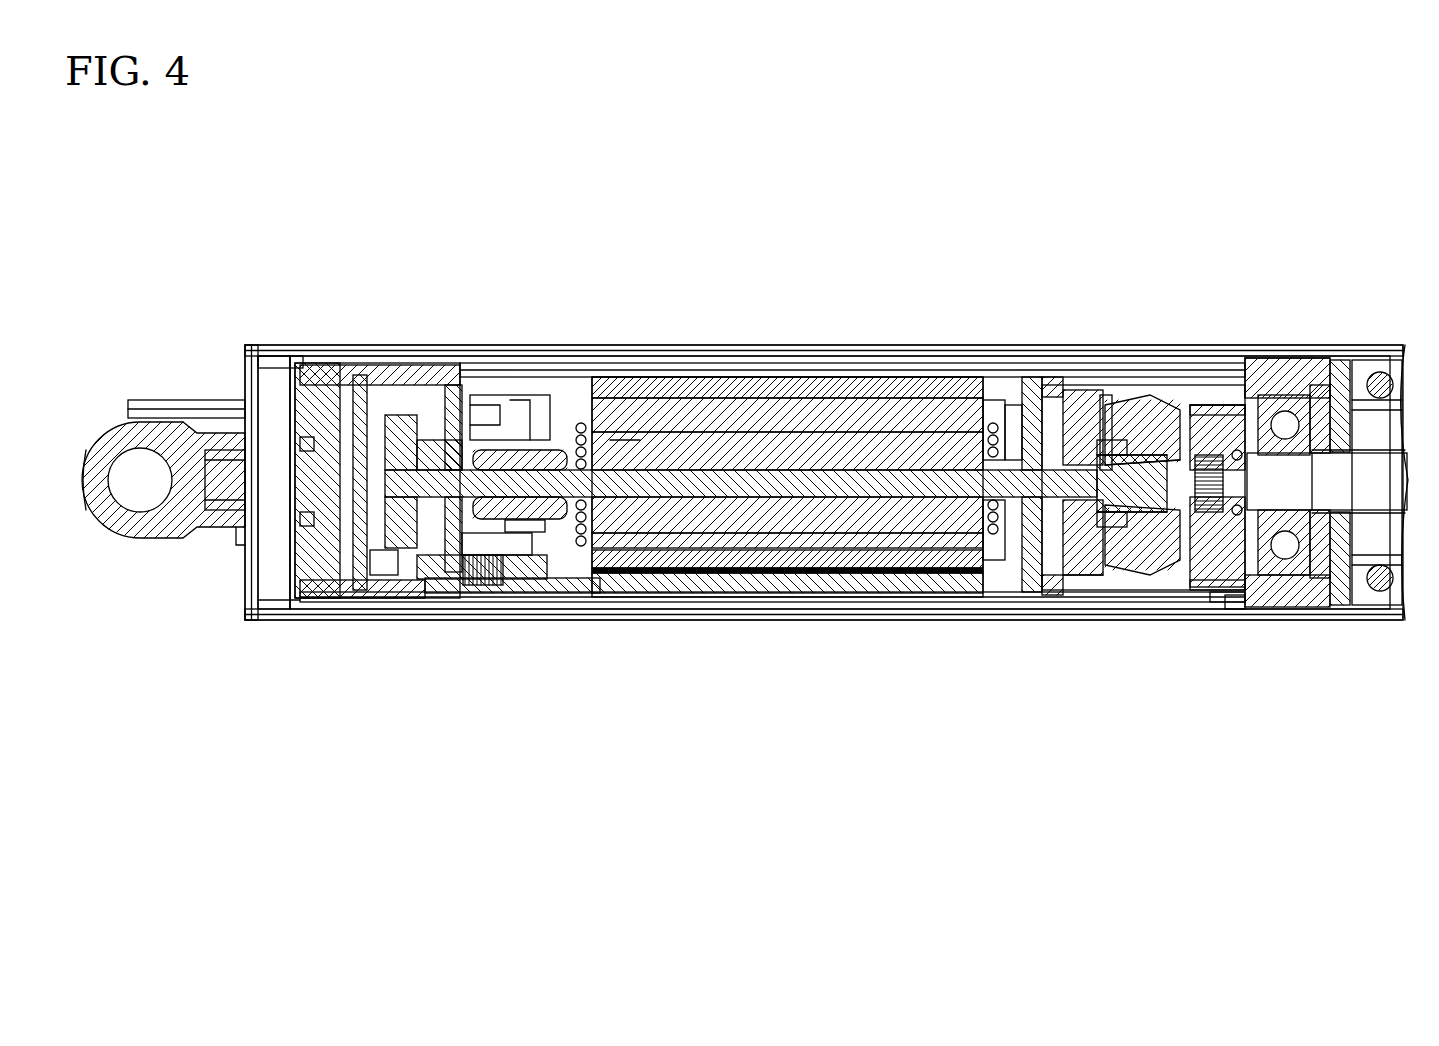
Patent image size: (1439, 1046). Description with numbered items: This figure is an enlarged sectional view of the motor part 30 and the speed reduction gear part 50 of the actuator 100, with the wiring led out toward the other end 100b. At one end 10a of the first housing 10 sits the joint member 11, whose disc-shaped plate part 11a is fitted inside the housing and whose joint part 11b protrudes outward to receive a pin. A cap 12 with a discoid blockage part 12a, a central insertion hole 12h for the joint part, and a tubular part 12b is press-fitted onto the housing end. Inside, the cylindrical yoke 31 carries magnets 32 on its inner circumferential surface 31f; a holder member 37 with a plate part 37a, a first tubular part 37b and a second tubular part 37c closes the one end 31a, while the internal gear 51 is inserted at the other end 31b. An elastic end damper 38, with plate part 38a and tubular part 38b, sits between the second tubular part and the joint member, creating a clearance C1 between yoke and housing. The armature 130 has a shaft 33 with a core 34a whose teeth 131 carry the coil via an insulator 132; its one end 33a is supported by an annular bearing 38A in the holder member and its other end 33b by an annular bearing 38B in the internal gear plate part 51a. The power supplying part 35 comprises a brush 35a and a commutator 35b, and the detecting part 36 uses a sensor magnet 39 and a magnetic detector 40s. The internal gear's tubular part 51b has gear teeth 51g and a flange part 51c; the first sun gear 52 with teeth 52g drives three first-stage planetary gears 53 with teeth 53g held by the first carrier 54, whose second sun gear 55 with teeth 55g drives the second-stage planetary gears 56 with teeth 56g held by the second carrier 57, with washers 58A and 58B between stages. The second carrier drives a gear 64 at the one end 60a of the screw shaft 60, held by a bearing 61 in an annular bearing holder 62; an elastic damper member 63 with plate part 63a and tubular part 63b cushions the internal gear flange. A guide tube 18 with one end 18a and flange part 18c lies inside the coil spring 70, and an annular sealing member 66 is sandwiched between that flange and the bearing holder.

The actuator 100 is at (1148, 226).
The mounting eye 100b is at (84, 472).
The first housing 10 is at (398, 410).
The one end of the first housing 10a is at (300, 370).
The joint member 11 is at (162, 425).
The plate part 11a is at (248, 400).
The joint part 11b is at (128, 400).
The cap 12 is at (258, 622).
The blockage part 12a is at (254, 612).
The tubular part 12b is at (320, 622).
The insertion hole 12h is at (236, 532).
The guide tube 18 is at (1360, 607).
The one end of the guide tube 18a is at (1380, 375).
The flange part 18c is at (1360, 375).
The motor part 30 is at (832, 336).
The yoke 31 is at (758, 372).
The one end of the yoke 31a is at (470, 592).
The other end of the yoke 31b is at (1205, 604).
The inner circumferential surface 31f is at (705, 392).
The magnets 32 is at (805, 385).
The shaft 33 is at (885, 487).
The one end of the shaft 33a is at (445, 440).
The other end of the shaft 33b is at (1002, 515).
The core 34a is at (748, 545).
The power supplying part 35 is at (520, 455).
The brush 35a is at (527, 520).
The commutator 35b is at (545, 420).
The detecting part 36 is at (400, 460).
The holder member 37 is at (446, 592).
The plate part 37a is at (405, 600).
The first tubular part 37b is at (490, 545).
The second tubular part 37c is at (447, 455).
The end damper 38 is at (290, 585).
The plate part 38a is at (300, 420).
The annular bearing 38A is at (480, 378).
The tubular part 38b is at (357, 378).
The annular bearing 38B is at (1040, 455).
The sensor magnet 39 is at (398, 545).
The magnetic detector 40s is at (366, 508).
The speed reduction gear part 50 is at (1180, 282).
The internal gear 51 is at (1125, 400).
The plate part 51a is at (1005, 445).
The tubular part 51b is at (1180, 420).
The flange part 51c is at (1215, 587).
The gear teeth 51g is at (1210, 415).
The first sun gear 52 is at (1080, 557).
The gear teeth 52g is at (1095, 562).
The first-stage planetary gears 53 is at (1077, 400).
The gear teeth 53g is at (1062, 588).
The first carrier 54 is at (1100, 410).
The second sun gear 55 is at (1090, 532).
The gear teeth 55g is at (1120, 572).
The second-stage planetary gears 56 is at (1160, 410).
The gear teeth 56g is at (1150, 548).
The second carrier 57 is at (1205, 500).
The washer 58A is at (1040, 522).
The washer 58B is at (1062, 380).
The screw shaft 60 is at (1375, 512).
The one end of the screw shaft 60a is at (1320, 512).
The bearing 61 is at (1290, 398).
The bearing holder 62 is at (1288, 398).
The damper member 63 is at (1256, 380).
The plate part 63a is at (1270, 378).
The tubular part 63b is at (1247, 380).
The gear 64 is at (1235, 602).
The sealing member 66 is at (1325, 380).
The coil spring 70 is at (1388, 388).
The armature 130 is at (920, 378).
The teeth 131 is at (882, 405).
The insulator 132 is at (937, 547).
The clearance C1 is at (627, 372).